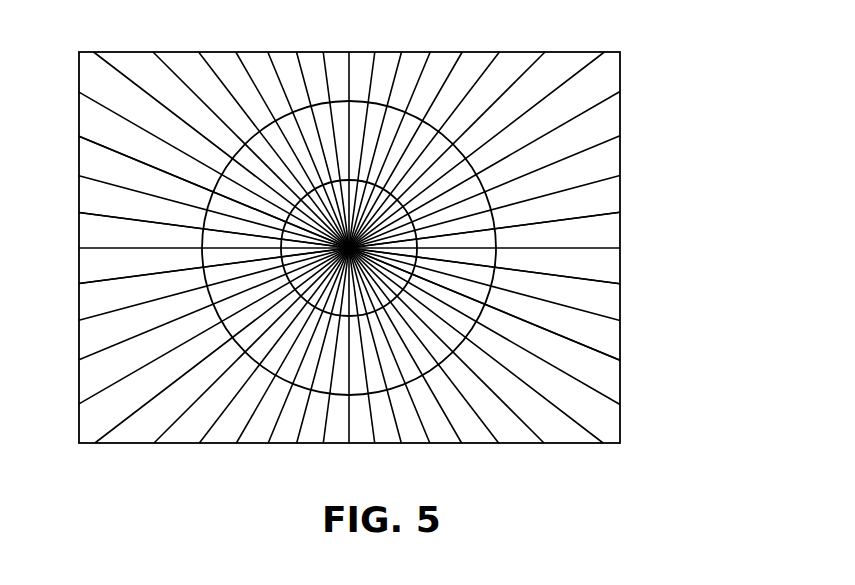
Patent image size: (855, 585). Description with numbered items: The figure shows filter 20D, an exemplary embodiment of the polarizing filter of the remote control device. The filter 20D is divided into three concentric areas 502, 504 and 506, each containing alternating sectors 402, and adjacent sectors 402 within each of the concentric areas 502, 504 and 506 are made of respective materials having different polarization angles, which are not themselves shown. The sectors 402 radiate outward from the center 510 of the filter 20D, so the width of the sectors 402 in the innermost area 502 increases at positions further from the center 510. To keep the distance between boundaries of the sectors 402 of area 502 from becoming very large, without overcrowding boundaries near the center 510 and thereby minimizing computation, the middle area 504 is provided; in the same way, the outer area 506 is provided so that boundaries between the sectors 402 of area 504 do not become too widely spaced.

The filter 20D is at (666, 48).
The sectors 402 is at (598, 266).
The concentric area 506 is at (598, 378).
The concentric area 502 is at (362, 303).
The concentric area 504 is at (460, 330).
The center 510 is at (342, 263).